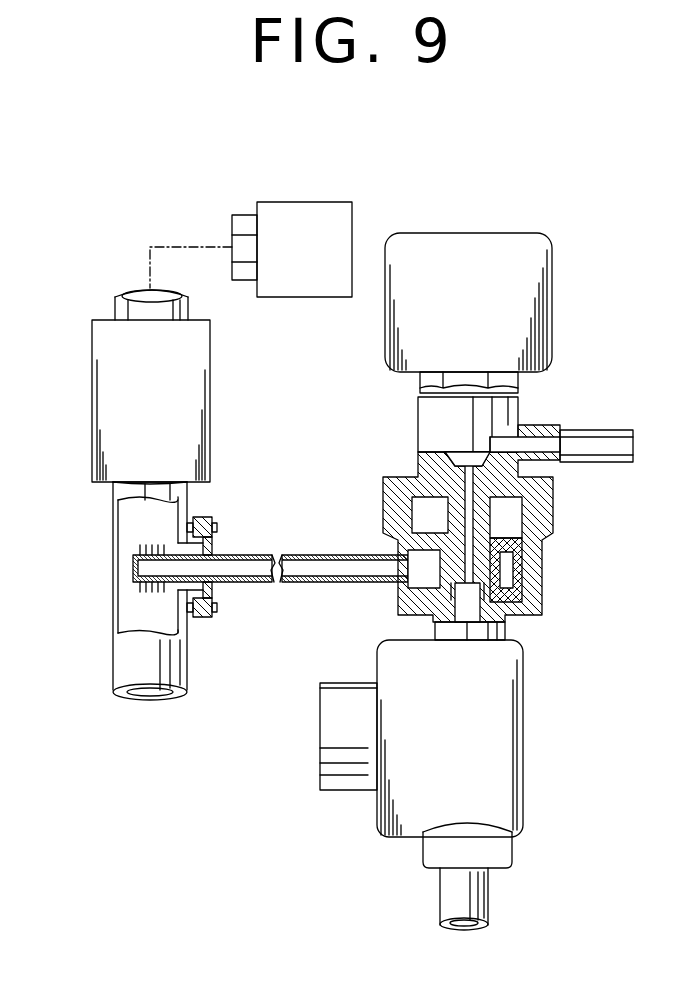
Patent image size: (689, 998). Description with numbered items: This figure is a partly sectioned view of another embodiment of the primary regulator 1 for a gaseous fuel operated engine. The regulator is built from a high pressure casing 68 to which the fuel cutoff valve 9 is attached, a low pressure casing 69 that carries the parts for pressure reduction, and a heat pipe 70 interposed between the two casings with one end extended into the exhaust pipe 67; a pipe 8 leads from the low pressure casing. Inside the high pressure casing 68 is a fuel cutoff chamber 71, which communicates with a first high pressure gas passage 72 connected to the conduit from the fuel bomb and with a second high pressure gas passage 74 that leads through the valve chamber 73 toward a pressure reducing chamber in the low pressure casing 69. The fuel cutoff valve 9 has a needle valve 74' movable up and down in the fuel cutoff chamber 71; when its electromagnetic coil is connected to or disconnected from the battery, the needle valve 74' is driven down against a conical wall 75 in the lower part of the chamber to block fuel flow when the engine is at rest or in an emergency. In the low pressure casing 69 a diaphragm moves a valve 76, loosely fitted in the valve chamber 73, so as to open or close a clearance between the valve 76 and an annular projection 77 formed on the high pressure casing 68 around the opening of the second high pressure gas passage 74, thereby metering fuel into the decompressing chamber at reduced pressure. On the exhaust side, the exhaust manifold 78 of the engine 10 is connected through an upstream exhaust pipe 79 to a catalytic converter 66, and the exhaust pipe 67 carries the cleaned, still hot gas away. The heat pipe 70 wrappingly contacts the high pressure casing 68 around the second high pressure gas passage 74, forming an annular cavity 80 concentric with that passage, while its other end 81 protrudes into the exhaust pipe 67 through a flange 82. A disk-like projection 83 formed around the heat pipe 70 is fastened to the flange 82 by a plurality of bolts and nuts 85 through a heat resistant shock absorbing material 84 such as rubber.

The primary regulator 1 is at (541, 772).
The outlet pipe 8 is at (488, 897).
The fuel cutoff valve 9 is at (470, 245).
The engine 10 is at (312, 202).
The catalytic converter 66 is at (102, 370).
The exhaust pipe 67 is at (113, 668).
The high pressure casing 68 is at (432, 406).
The low pressure casing 69 is at (523, 718).
The heat pipe 70 is at (319, 596).
The fuel cutoff chamber 71 is at (437, 453).
The first high pressure gas passage 72 is at (556, 440).
The valve chamber 73 is at (507, 624).
The second high pressure gas passage 74 is at (445, 523).
The needle valve 74' is at (421, 442).
The conical wall 75 is at (528, 462).
The valve 76 is at (466, 605).
The annular projection 77 is at (482, 610).
The exhaust manifold 78 is at (232, 218).
The upstream exhaust pipe 79 is at (178, 244).
The annular cavity 80 is at (507, 560).
The other end of heat pipe 81 is at (133, 563).
The flange 82 is at (197, 517).
The disk-like projection 83 is at (215, 545).
The heat resistant shock absorbing material 84 is at (200, 618).
The bolts and nuts 85 is at (215, 528).